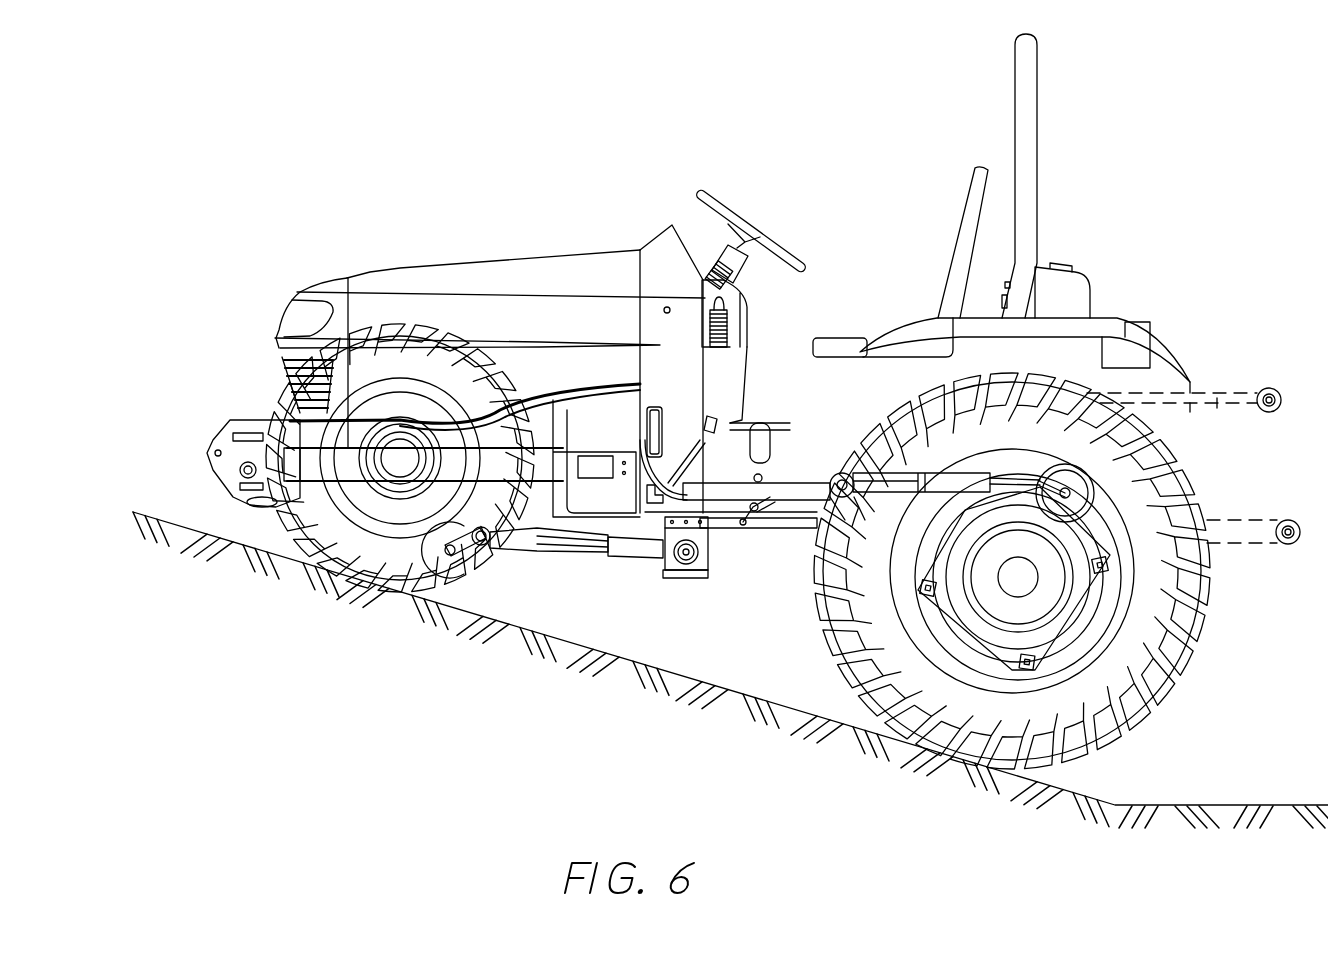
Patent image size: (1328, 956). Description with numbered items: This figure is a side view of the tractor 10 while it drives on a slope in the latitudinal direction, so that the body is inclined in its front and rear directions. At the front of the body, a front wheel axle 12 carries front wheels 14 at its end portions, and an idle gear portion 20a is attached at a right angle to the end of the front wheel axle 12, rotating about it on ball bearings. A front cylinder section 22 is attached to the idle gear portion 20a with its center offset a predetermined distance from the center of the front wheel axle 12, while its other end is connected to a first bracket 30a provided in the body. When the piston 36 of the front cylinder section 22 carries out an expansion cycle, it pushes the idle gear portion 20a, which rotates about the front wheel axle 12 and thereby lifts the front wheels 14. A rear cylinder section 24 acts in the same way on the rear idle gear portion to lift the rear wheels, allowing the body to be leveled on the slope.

The tractor 10 is at (578, 183).
The front wheel axle 12 is at (403, 500).
The front wheels 14 is at (310, 587).
The idle gear portion 20a is at (468, 570).
The front cylinder section 22 is at (637, 550).
The rear cylinder section 24 is at (862, 470).
The first bracket 30a is at (703, 550).
The piston 36 is at (537, 557).